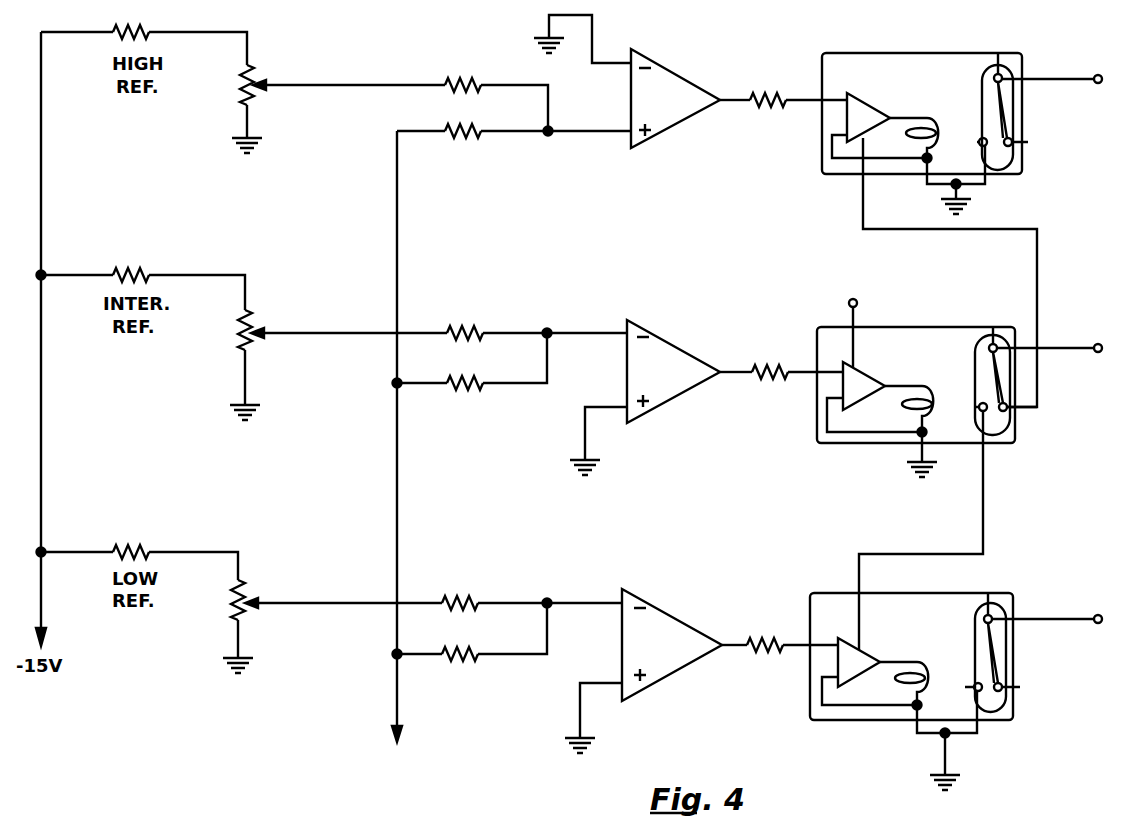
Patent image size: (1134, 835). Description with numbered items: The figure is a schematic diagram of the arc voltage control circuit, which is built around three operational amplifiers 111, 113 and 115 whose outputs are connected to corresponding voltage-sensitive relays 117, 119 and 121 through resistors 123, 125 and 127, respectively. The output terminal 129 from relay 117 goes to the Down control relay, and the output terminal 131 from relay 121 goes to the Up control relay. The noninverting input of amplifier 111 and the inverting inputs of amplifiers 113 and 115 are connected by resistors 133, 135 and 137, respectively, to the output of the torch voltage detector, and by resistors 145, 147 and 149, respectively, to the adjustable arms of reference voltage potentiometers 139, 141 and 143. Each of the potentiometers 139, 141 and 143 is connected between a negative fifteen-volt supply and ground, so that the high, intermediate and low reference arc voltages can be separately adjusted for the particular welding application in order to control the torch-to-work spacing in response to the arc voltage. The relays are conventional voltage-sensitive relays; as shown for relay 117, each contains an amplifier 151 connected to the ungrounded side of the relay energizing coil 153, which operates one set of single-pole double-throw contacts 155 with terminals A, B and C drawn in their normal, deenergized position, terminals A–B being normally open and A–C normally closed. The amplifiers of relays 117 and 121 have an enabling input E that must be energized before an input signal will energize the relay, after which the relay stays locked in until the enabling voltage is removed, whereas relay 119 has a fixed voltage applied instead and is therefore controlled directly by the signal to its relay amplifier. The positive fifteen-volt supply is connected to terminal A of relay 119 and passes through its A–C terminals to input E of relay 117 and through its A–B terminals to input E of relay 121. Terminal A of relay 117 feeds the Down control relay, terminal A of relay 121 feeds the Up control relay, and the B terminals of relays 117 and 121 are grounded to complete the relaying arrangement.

The operational amplifier 111 is at (673, 63).
The operational amplifier 113 is at (678, 346).
The operational amplifier 115 is at (677, 620).
The voltage-sensitive relay 117 is at (906, 53).
The voltage-sensitive relay 119 is at (897, 327).
The voltage-sensitive relay 121 is at (938, 594).
The resistor 123 is at (766, 97).
The resistor 125 is at (766, 363).
The resistor 127 is at (765, 636).
The output terminal 129 is at (1096, 83).
The output terminal 131 is at (1096, 615).
The resistor 133 is at (470, 140).
The resistor 135 is at (470, 392).
The resistor 137 is at (470, 662).
The reference voltage potentiometer 139 is at (259, 67).
The reference voltage potentiometer 141 is at (250, 319).
The reference voltage potentiometer 143 is at (248, 586).
The resistor 145 is at (464, 76).
The resistor 147 is at (466, 325).
The resistor 149 is at (467, 597).
The amplifier 151 is at (874, 101).
The relay energizing coil 153 is at (939, 127).
The SPDT contacts 155 is at (1020, 73).